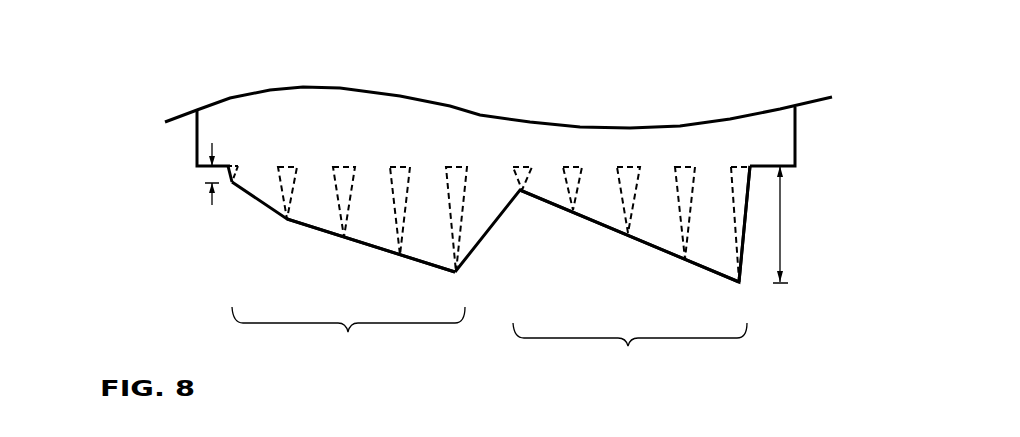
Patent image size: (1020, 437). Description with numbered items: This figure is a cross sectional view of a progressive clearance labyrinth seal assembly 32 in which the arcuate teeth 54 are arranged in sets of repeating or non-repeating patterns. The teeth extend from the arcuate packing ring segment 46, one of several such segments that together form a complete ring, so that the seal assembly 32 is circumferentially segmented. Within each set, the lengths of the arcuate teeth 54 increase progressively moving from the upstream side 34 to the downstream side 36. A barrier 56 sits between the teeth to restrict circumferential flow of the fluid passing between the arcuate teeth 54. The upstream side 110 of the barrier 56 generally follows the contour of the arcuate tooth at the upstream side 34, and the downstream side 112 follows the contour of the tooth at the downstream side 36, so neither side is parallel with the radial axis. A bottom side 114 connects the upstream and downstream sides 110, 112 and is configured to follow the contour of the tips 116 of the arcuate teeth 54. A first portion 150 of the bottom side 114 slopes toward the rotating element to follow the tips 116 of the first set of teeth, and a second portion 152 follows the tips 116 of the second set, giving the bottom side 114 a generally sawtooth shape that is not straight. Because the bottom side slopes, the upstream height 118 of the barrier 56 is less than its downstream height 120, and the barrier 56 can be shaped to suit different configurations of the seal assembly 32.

The seal assembly 32 is at (833, 63).
The upstream side 34 is at (140, 211).
The downstream side 36 is at (840, 263).
The arcuate packing ring segment 46 is at (797, 150).
The arcuate teeth 54 is at (344, 175).
The barrier 56 is at (700, 257).
The upstream side of the barrier 110 is at (232, 184).
The downstream side of the barrier 112 is at (742, 257).
The bottom side 114 is at (360, 244).
The tips 116 is at (400, 254).
The upstream height 118 is at (211, 174).
The downstream height 120 is at (781, 224).
The first portion 150 is at (348, 333).
The second portion 152 is at (630, 349).